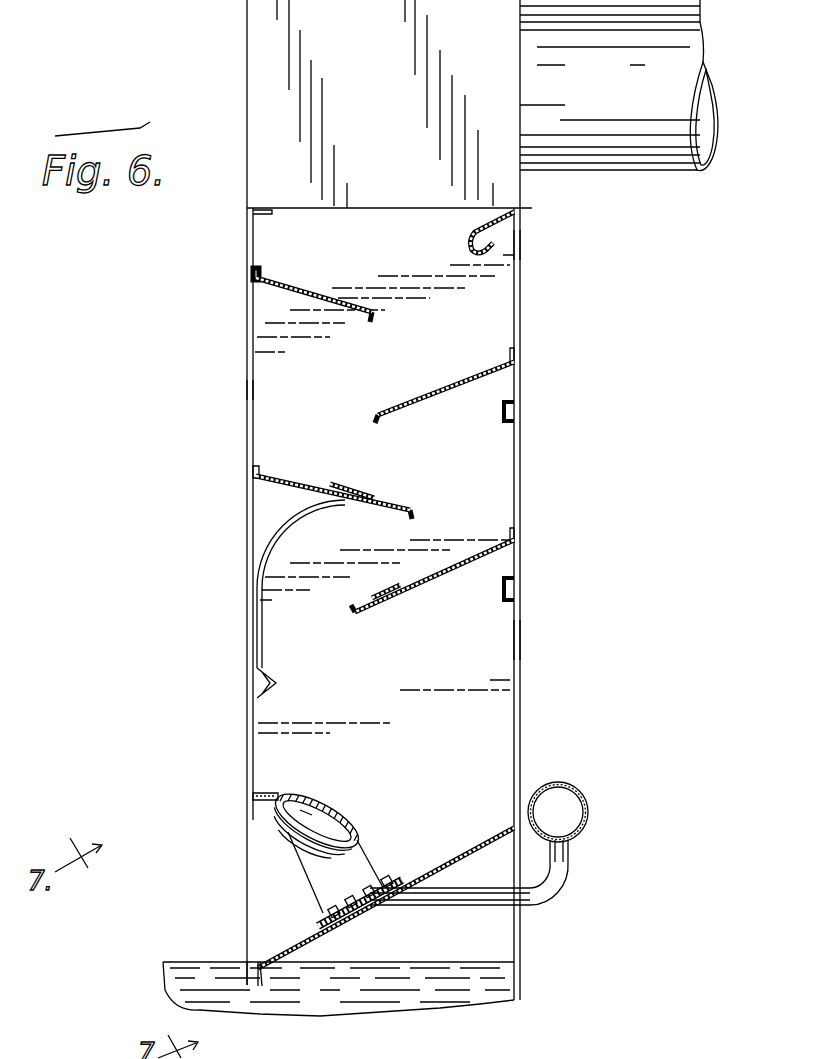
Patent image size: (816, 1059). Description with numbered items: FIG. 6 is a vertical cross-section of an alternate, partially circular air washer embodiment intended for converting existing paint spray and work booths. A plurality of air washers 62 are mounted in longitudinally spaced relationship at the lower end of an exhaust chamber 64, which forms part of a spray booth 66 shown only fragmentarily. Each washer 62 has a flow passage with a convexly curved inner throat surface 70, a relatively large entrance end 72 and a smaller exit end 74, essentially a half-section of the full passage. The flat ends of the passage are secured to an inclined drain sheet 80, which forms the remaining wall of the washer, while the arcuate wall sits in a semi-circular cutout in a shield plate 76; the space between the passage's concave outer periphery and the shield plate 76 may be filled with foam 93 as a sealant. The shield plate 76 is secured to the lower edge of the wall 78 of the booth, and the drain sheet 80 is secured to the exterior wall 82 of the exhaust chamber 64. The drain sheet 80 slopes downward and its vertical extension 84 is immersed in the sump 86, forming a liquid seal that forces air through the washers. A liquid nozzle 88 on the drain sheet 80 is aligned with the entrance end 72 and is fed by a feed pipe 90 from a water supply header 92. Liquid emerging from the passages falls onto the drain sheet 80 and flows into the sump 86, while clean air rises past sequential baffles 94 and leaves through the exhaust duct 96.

The air washer 62 is at (392, 884).
The exhaust chamber 64 is at (446, 348).
The spray booth 66 is at (222, 604).
The inner throat surface 70 is at (372, 866).
The entrance end 72 is at (285, 822).
The exit end 74 is at (352, 848).
The shield plate 76 is at (286, 792).
The wall 78 is at (254, 390).
The drain sheet 80 is at (497, 836).
The exterior wall 82 is at (513, 640).
The vertical extension 84 is at (255, 975).
The sump 86 is at (300, 990).
The liquid nozzle 88 is at (368, 920).
The feed pipe 90 is at (500, 906).
The water supply header 92 is at (588, 812).
The foam 93 is at (315, 810).
The baffles 94 is at (423, 400).
The exhaust duct 96 is at (605, 150).